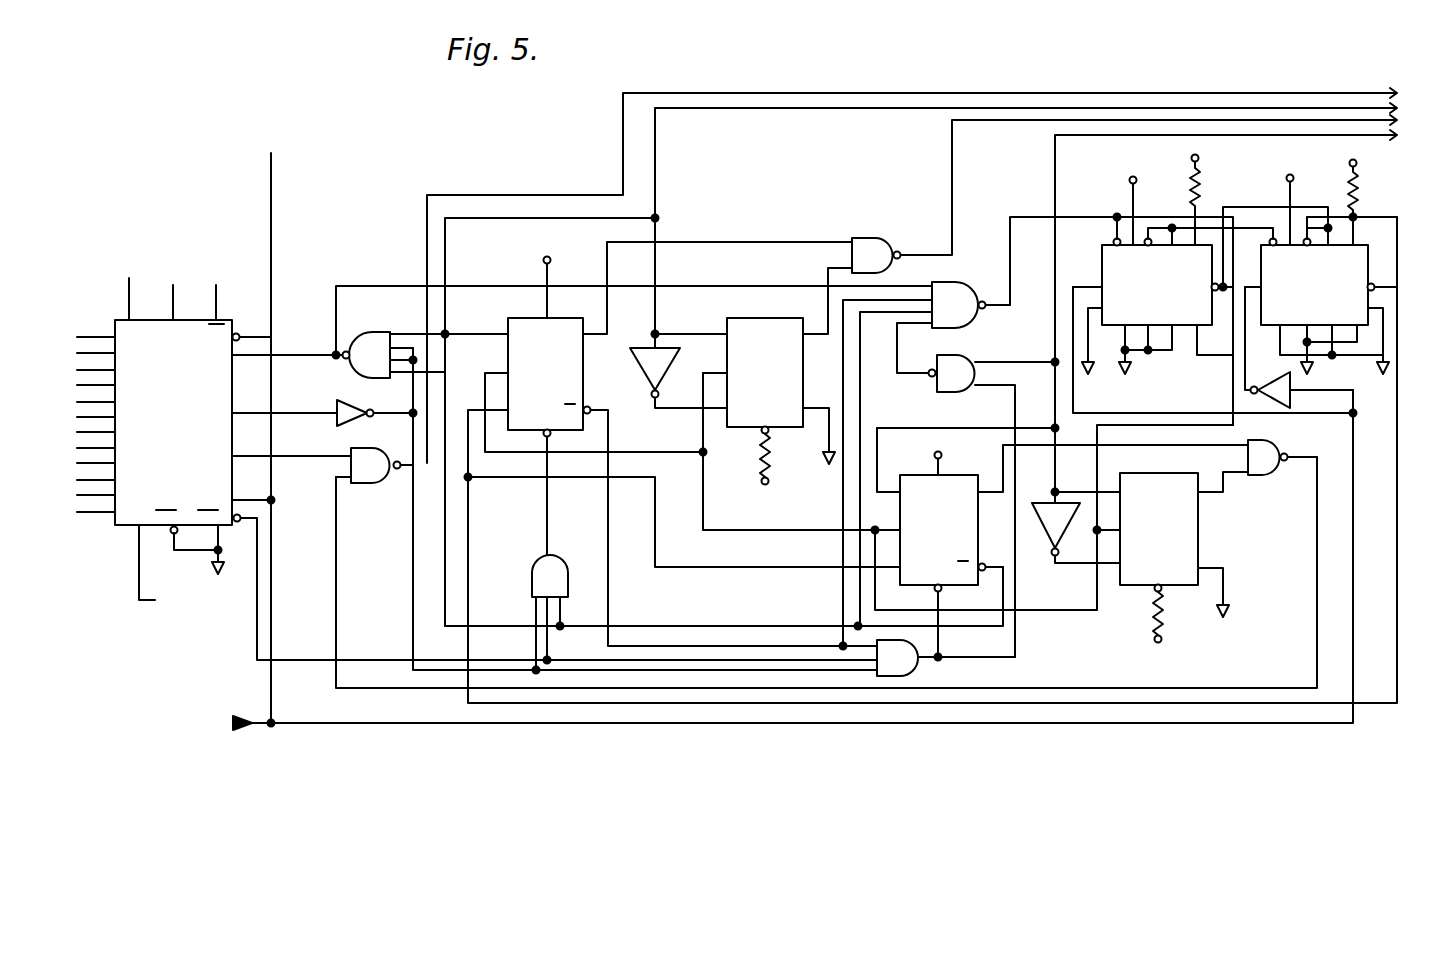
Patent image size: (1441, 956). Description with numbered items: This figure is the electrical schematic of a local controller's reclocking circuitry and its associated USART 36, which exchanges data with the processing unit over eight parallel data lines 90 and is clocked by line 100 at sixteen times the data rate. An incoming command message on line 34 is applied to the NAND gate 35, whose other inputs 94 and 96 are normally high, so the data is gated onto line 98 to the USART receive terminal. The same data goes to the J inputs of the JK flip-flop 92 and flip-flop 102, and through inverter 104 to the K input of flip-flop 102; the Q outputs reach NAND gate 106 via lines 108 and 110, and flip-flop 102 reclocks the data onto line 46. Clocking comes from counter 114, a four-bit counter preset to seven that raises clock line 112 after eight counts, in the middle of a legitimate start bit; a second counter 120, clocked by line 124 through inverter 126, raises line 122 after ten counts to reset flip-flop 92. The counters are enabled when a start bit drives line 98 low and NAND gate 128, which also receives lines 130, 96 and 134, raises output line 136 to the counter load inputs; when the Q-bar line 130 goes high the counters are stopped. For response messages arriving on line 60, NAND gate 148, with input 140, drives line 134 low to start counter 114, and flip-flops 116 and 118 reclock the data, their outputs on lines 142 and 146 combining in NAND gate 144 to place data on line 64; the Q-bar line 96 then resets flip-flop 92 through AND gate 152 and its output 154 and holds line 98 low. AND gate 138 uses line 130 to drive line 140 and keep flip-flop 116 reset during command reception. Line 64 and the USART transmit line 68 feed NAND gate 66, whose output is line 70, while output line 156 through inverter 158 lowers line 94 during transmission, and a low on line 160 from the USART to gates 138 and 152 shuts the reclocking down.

The data lines 90 is at (86, 295).
The USART 36 is at (152, 530).
The NAND gate 35 is at (360, 332).
The output line 156 is at (283, 410).
The inverter 158 is at (362, 410).
The line 68 is at (278, 456).
The NAND gate 66 is at (368, 455).
The line 160 is at (257, 660).
The input line 94 is at (413, 555).
The line 64 is at (382, 693).
The clock line 100 is at (232, 733).
The line 70 is at (503, 193).
The line 34 is at (445, 252).
The line 98 is at (385, 284).
The JK flip-flop 92 is at (583, 366).
The line 108 is at (730, 240).
The Q-bar output line 130 is at (608, 433).
The output line 154 is at (547, 503).
The AND gate 152 is at (556, 562).
The output line 122 is at (468, 517).
The inverter 104 is at (672, 366).
The flip-flop 102 is at (750, 318).
The line 110 is at (828, 268).
The NAND gate 106 is at (873, 237).
The line 46 is at (952, 218).
The NAND gate 128 is at (950, 286).
The output line 136 is at (1020, 217).
The output line 134 is at (897, 348).
The NAND gate 148 is at (957, 392).
The Q-bar output line 96 is at (440, 372).
The line 60 is at (1055, 333).
The clock line 112 is at (703, 480).
The JK flip-flop 116 is at (958, 475).
The line 142 is at (991, 497).
The output line 140 is at (940, 640).
The AND gate 138 is at (919, 670).
The JK flip-flop 118 is at (1150, 474).
The line 146 is at (1212, 497).
The NAND gate 144 is at (1283, 462).
The counter 114 is at (1186, 330).
The second counter 120 is at (1368, 262).
The line 124 is at (1250, 376).
The inverter 126 is at (1290, 398).